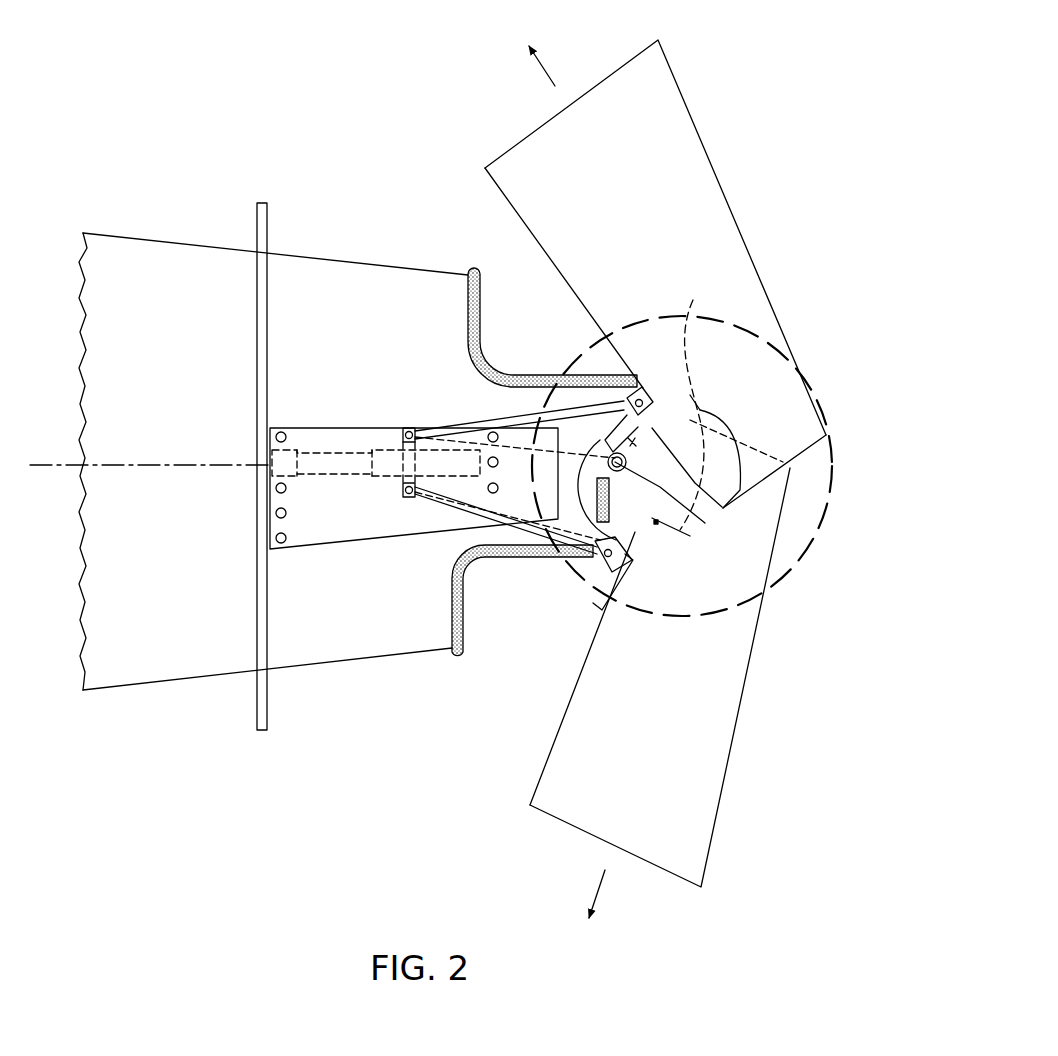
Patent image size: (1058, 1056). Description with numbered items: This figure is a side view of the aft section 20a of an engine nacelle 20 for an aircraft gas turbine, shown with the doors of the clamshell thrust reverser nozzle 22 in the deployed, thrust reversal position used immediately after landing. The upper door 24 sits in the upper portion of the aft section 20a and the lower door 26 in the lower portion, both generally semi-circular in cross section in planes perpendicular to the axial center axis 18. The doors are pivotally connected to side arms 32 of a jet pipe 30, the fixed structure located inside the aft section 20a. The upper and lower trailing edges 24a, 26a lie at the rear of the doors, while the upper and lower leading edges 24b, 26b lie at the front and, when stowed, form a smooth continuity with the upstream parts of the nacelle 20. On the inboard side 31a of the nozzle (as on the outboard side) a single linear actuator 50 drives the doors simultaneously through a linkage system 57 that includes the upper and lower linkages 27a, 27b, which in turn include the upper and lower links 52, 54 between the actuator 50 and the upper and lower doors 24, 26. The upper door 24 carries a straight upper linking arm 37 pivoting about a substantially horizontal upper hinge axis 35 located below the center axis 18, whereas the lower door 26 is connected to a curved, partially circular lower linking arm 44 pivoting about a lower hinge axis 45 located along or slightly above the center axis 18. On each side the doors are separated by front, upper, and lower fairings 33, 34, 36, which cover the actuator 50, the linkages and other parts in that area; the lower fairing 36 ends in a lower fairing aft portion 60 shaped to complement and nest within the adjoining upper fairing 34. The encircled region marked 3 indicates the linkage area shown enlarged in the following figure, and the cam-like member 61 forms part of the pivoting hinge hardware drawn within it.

The detail region of FIG. 3 is at (806, 555).
The axial center axis 18 is at (147, 436).
The engine nacelle 20 is at (148, 184).
The aft section 20a is at (330, 198).
The clamshell thrust reverser nozzle 22 is at (770, 266).
The upper door 24 is at (511, 153).
The upper trailing edge 24a is at (828, 440).
The upper leading edge 24b is at (620, 66).
The lower door 26 is at (553, 810).
The lower trailing edge 26a is at (772, 460).
The lower leading edge 26b is at (667, 872).
The upper linkage 27a is at (409, 424).
The lower linkage 27b is at (408, 502).
The jet pipe 30 is at (410, 668).
The inboard side 31a is at (160, 702).
The side arm 32 is at (545, 553).
The front fairing 33 is at (338, 532).
The upper fairing 34 is at (682, 440).
The upper hinge axis 35 is at (640, 537).
The lower fairing 36 is at (683, 530).
The upper linking arm 37 is at (652, 390).
The lower linking arm 44 is at (588, 498).
The lower hinge axis 45 is at (610, 458).
The linear actuator 50 is at (390, 447).
The upper link 52 is at (493, 423).
The lower link 54 is at (513, 553).
The linkage system 57 is at (519, 393).
The lower fairing aft portion 60 is at (698, 406).
The cam 61 is at (715, 493).